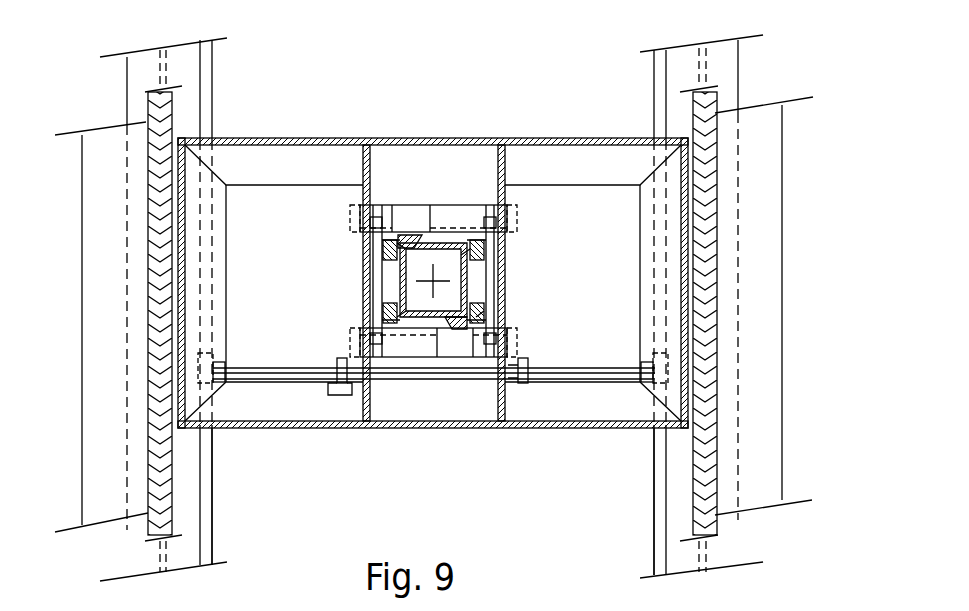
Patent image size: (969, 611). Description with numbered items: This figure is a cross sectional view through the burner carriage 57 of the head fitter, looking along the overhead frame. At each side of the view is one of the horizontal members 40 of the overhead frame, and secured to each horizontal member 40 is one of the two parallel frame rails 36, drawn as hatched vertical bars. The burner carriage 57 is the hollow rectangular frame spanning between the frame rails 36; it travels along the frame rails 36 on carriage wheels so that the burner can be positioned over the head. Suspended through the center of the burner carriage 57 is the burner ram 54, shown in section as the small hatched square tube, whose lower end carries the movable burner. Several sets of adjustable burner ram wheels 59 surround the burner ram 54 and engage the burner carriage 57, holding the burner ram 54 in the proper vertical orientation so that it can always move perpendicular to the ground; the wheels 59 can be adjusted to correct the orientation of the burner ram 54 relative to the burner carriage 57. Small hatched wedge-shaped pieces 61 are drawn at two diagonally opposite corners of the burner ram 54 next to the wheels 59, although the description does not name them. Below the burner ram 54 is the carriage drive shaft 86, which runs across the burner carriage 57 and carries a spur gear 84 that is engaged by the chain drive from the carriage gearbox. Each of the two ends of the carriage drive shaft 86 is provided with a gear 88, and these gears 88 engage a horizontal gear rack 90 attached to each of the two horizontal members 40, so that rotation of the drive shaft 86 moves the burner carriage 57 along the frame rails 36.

The frame rails 36 is at (175, 513).
The horizontal members 40 is at (127, 100).
The burner ram 54 is at (470, 287).
The burner carriage 57 is at (568, 138).
The adjustable burner ram wheels 59 is at (383, 252).
The wedge 61 is at (402, 233).
The spur gear 84 is at (334, 395).
The carriage drive shaft 86 is at (574, 368).
The gears 88 is at (212, 392).
The horizontal gear rack 90 is at (213, 488).